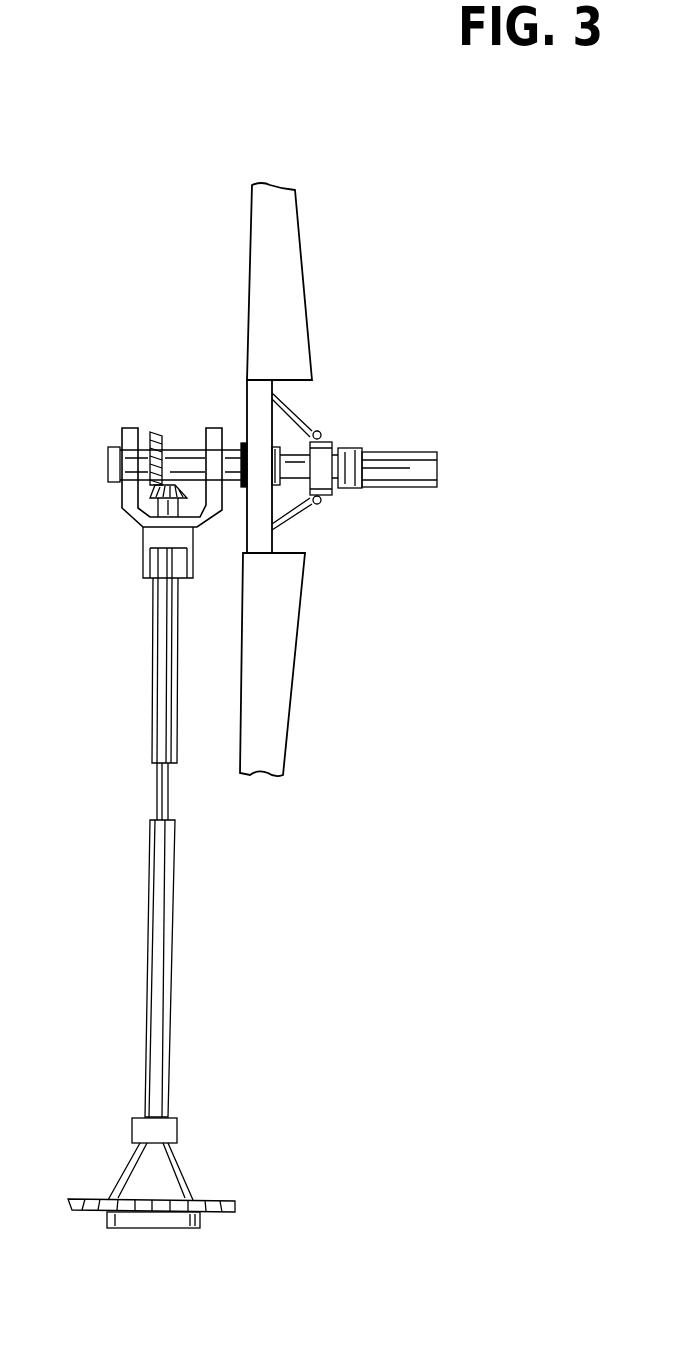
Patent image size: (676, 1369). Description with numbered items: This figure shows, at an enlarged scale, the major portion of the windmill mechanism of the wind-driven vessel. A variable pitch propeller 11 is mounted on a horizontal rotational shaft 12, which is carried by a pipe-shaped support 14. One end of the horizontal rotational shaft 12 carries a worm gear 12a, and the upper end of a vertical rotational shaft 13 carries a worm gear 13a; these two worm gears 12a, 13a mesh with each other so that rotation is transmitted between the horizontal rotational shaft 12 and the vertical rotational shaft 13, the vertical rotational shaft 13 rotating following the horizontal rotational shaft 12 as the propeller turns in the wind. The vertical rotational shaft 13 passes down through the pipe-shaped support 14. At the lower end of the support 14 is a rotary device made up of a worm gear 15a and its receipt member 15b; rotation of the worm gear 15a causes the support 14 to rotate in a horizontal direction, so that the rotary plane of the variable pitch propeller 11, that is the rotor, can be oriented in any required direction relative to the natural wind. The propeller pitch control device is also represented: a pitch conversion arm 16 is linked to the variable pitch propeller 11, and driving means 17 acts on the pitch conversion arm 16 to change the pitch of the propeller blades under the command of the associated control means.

The rotor blade 11 is at (293, 267).
The rotor shaft 12 is at (231, 443).
The worm gear 12a is at (157, 430).
The transmission rod 13 is at (155, 798).
The bevel gear 13a is at (155, 497).
The rod casing 14 is at (155, 672).
The disc 15a is at (213, 1200).
The hub 15b is at (160, 1230).
The strut 16 is at (320, 400).
The output shaft 17 is at (417, 450).